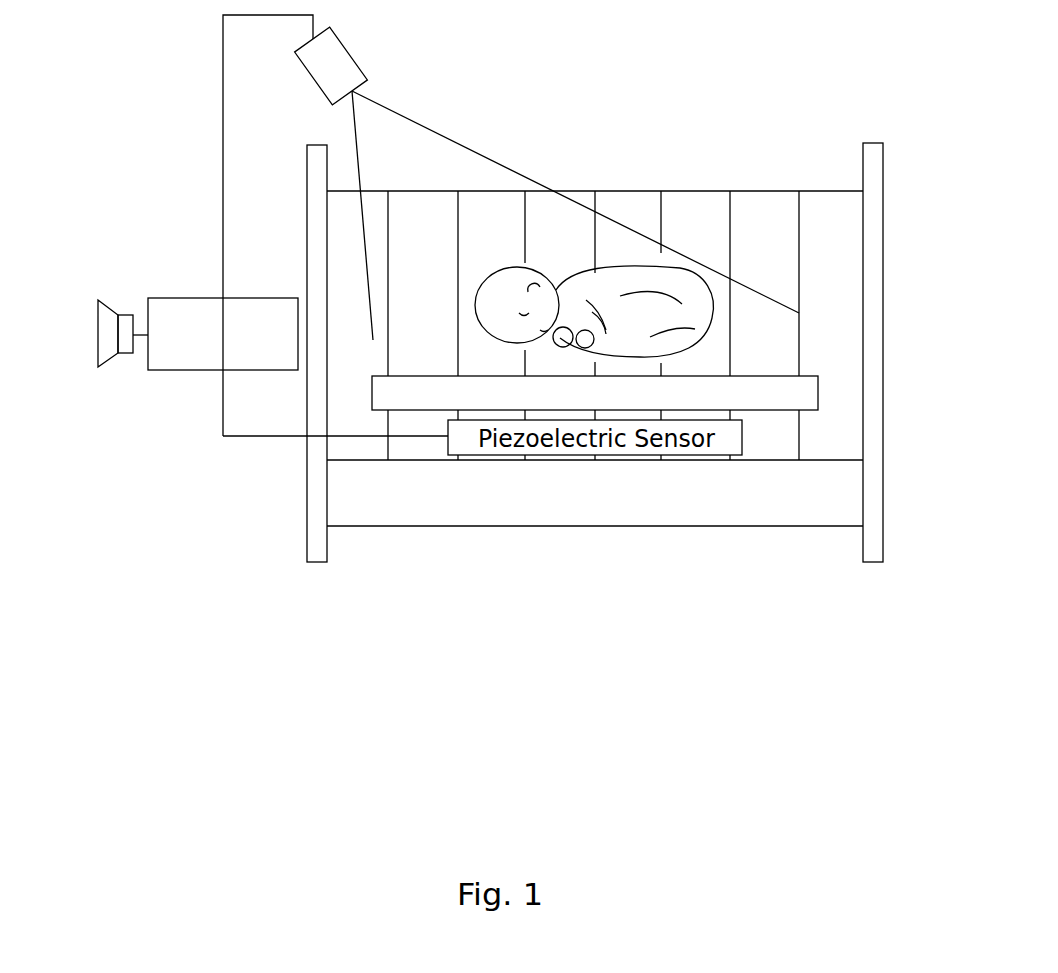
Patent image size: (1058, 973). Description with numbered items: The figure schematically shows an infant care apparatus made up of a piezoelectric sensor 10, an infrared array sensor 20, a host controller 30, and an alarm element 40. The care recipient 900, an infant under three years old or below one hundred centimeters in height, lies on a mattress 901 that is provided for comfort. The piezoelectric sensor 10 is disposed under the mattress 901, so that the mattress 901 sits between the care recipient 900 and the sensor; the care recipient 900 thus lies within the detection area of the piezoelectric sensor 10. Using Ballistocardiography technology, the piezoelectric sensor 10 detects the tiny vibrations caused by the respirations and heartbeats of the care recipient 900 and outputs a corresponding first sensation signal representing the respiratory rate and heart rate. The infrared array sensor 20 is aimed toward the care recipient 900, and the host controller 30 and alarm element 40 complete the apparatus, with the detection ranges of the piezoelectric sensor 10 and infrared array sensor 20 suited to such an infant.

The piezoelectric sensor 10 is at (558, 460).
The infrared array sensor 20 is at (347, 53).
The host controller 30 is at (183, 297).
The alarm element 40 is at (98, 335).
The care recipient 900 is at (618, 273).
The mattress 901 is at (820, 393).